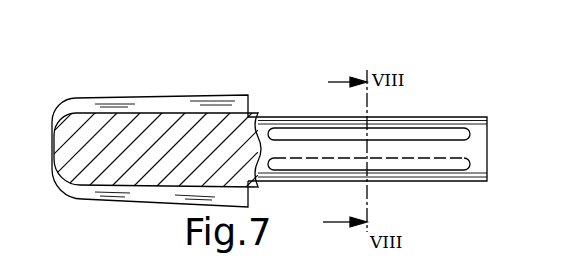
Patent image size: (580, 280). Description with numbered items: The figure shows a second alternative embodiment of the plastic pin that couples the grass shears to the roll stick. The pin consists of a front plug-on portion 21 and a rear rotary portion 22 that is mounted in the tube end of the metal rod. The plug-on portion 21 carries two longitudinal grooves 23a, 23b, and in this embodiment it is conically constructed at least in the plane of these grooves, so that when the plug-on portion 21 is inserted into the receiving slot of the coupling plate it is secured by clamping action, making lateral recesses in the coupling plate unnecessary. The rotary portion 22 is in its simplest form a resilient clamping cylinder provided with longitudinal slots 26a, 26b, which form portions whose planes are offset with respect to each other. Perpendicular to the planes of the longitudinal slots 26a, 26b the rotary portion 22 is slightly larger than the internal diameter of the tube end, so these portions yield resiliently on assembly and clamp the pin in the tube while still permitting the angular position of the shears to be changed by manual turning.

The plug-on portion 21 is at (68, 140).
The rotary portion 22 is at (396, 177).
The longitudinal groove 23a is at (127, 105).
The longitudinal groove 23b is at (128, 194).
The longitudinal slot 26a is at (443, 136).
The longitudinal slot 26b is at (447, 170).